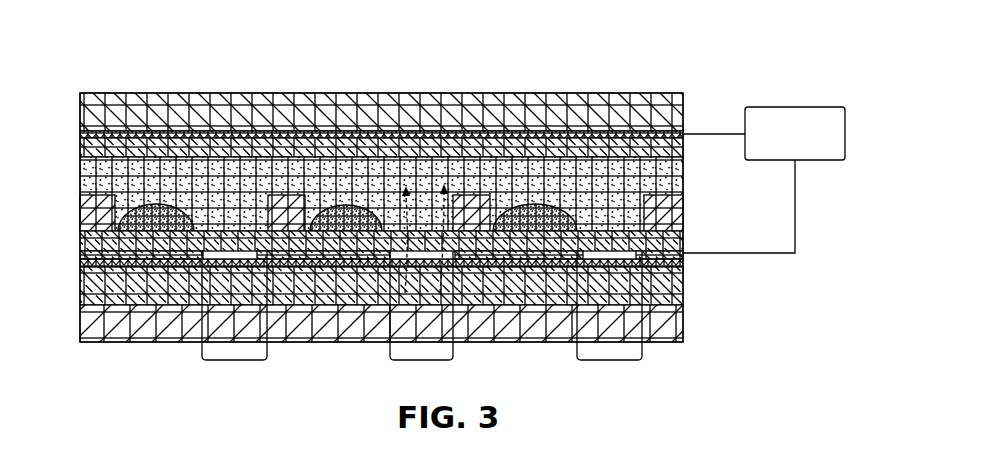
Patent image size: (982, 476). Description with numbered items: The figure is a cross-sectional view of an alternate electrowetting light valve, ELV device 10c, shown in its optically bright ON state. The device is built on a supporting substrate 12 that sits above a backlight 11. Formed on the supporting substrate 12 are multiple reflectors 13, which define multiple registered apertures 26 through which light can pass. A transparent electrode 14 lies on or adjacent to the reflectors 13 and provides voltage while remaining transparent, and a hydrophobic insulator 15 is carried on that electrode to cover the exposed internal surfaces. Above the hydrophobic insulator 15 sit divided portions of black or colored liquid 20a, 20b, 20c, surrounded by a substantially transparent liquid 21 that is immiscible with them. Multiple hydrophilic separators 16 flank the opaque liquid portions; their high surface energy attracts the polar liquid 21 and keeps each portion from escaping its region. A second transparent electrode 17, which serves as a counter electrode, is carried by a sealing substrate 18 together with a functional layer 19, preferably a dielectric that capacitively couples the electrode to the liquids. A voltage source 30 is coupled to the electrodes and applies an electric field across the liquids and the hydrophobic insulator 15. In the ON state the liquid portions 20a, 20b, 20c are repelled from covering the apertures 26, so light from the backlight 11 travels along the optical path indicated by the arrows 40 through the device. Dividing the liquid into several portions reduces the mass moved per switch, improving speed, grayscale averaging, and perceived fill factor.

The ELV device 10c is at (668, 52).
The backlight 11 is at (683, 327).
The supporting substrate 12 is at (80, 288).
The reflector 13 is at (80, 255).
The transparent electrode 14 is at (231, 252).
The hydrophobic insulator 15 is at (80, 241).
The hydrophilic separator 16 is at (80, 213).
The second transparent electrode 17 is at (80, 127).
The sealing substrate 18 is at (683, 119).
The functional layer 19 is at (80, 153).
The portion of black or colored liquid 20a is at (118, 208).
The portion of black or colored liquid 20b is at (348, 205).
The portion of black or colored liquid 20c is at (535, 205).
The transparent liquid 21 is at (683, 177).
The aperture 26 is at (234, 361).
The voltage source 30 is at (825, 107).
The optical path arrows 40 is at (404, 214).